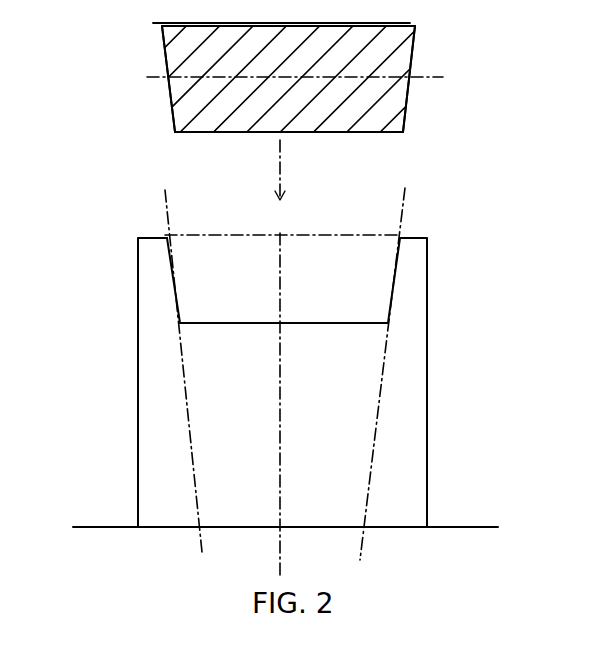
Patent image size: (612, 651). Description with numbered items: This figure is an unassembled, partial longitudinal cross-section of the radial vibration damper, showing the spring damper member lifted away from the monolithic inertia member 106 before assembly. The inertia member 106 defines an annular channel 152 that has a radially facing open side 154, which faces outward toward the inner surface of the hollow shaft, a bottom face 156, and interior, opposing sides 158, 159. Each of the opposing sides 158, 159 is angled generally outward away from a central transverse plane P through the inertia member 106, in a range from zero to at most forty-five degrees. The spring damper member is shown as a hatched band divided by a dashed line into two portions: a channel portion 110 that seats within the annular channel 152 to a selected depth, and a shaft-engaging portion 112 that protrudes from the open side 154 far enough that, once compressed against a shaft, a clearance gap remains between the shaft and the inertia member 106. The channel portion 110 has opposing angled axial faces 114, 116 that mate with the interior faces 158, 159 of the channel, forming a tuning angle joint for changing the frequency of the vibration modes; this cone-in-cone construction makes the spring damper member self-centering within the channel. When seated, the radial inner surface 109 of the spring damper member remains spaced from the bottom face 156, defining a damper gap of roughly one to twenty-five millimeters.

The monolithic inertia member 106 is at (410, 23).
The radial inner surface 109 is at (205, 134).
The channel portion 110 is at (397, 108).
The shaft-engaging portion 112 is at (177, 47).
The angled axial face 114 is at (170, 95).
The angled axial face 116 is at (410, 97).
The annular channel 152 is at (257, 238).
The radially facing open side 154 is at (323, 232).
The bottom face 156 is at (309, 321).
The interior opposing side 158 is at (171, 279).
The interior opposing side 159 is at (397, 278).
The central transverse plane P is at (280, 559).